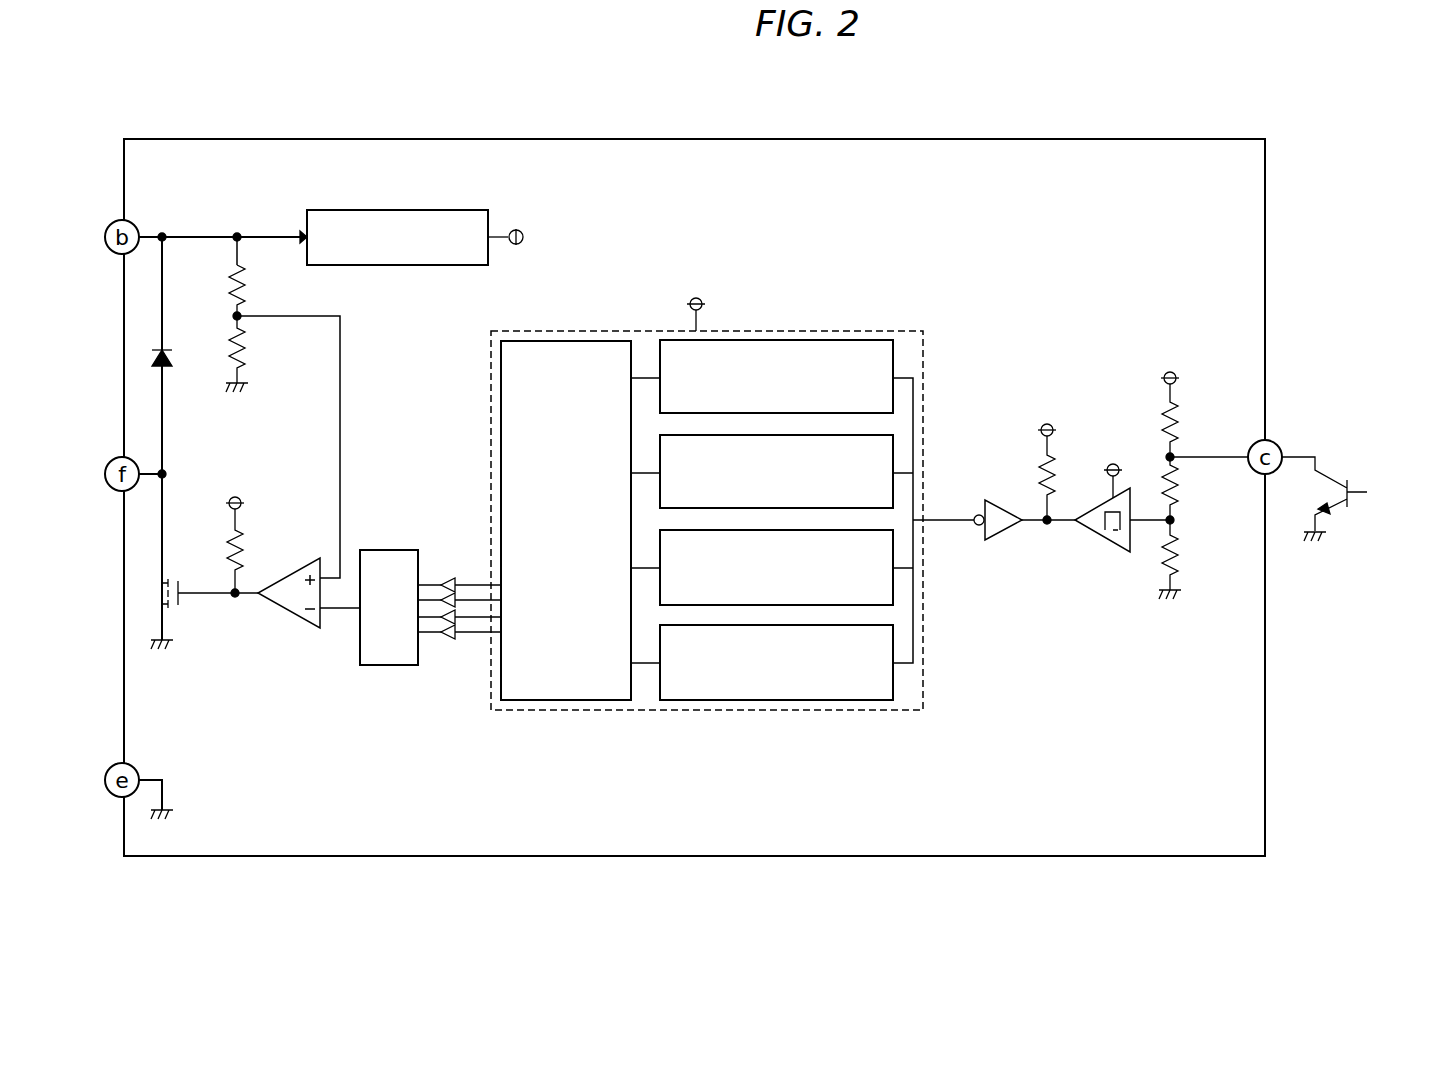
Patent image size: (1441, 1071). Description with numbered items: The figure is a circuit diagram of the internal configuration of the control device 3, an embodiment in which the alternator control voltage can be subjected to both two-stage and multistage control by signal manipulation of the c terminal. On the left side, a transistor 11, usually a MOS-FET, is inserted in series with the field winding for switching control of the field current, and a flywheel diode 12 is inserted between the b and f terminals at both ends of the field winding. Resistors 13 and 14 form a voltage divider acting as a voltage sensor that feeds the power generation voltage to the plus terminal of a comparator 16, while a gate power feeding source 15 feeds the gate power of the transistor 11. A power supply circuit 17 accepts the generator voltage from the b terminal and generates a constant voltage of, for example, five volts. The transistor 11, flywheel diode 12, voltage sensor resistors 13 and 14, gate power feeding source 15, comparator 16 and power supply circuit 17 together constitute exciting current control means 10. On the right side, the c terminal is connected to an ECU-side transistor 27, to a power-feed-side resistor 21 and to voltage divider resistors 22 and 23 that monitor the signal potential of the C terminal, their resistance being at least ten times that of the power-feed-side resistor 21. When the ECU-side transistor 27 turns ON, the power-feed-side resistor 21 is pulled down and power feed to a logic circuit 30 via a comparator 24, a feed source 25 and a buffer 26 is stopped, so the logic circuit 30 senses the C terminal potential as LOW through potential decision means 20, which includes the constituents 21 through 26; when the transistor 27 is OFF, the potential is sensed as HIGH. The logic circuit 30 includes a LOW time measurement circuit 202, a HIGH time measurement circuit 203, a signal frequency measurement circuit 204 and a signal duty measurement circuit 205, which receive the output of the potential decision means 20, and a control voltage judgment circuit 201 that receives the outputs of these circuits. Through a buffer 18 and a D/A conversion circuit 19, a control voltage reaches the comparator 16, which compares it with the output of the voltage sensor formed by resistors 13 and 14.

The control device 3 is at (691, 139).
The exciting current control means 10 is at (313, 436).
The transistor 11 is at (185, 602).
The flywheel diode 12 is at (171, 356).
The voltage sensor resistor 13 is at (247, 285).
The voltage sensor resistor 14 is at (247, 349).
The gate power feeding source 15 is at (242, 533).
The comparator 16 is at (292, 614).
The power supply circuit 17 is at (397, 210).
The buffer 18 is at (443, 580).
The D/A conversion circuit 19 is at (380, 550).
The potential decision means 20 is at (1093, 384).
The power-feed-side resistor 21 is at (1174, 388).
The voltage divider resistor 22 is at (1180, 485).
The voltage divider resistor 23 is at (1180, 550).
The comparator 24 is at (1110, 546).
The feed source 25 is at (1053, 436).
The buffer 26 is at (998, 510).
The ECU-side transistor 27 is at (1336, 512).
The logic circuit 30 is at (488, 390).
The control voltage judgment circuit 201 is at (568, 700).
The "LOW" time measurement circuit 202 is at (893, 362).
The "HIGH" time measurement circuit 203 is at (893, 455).
The signal frequency measurement circuit 204 is at (893, 583).
The signal duty measurement circuit 205 is at (893, 678).